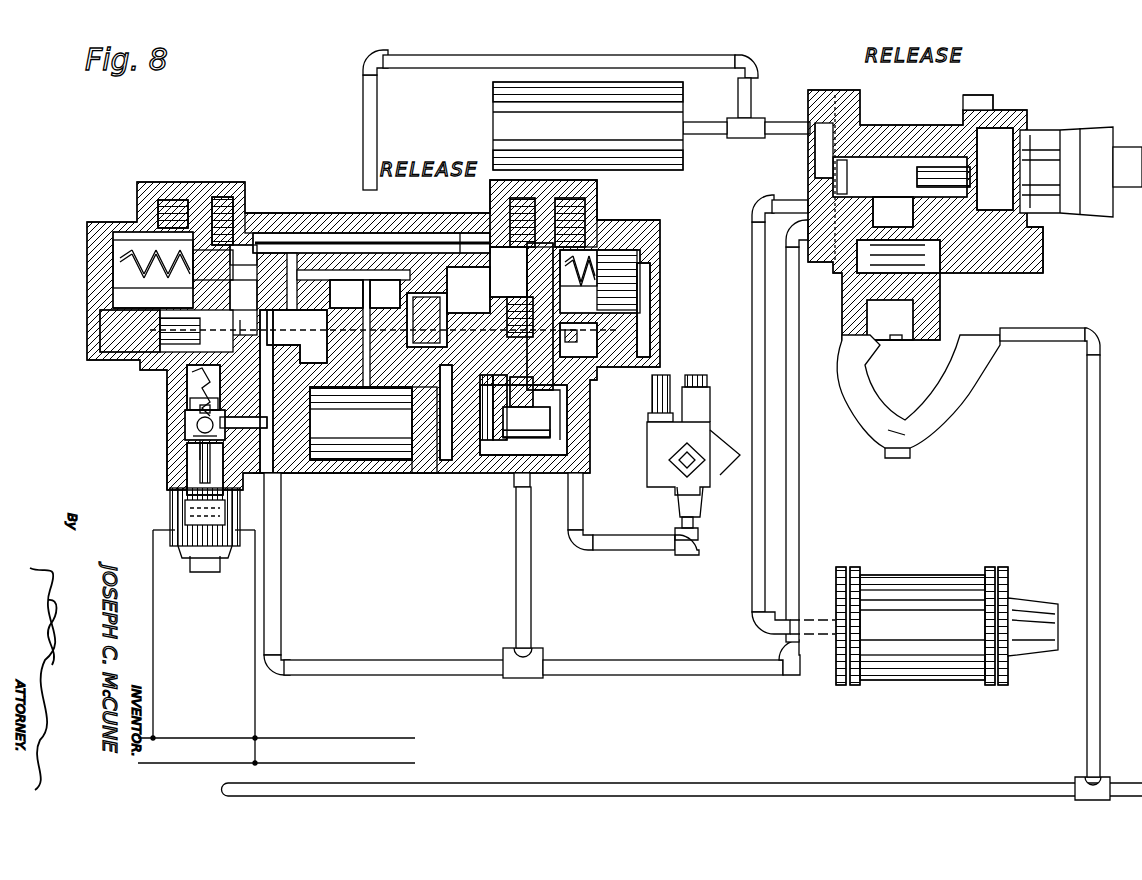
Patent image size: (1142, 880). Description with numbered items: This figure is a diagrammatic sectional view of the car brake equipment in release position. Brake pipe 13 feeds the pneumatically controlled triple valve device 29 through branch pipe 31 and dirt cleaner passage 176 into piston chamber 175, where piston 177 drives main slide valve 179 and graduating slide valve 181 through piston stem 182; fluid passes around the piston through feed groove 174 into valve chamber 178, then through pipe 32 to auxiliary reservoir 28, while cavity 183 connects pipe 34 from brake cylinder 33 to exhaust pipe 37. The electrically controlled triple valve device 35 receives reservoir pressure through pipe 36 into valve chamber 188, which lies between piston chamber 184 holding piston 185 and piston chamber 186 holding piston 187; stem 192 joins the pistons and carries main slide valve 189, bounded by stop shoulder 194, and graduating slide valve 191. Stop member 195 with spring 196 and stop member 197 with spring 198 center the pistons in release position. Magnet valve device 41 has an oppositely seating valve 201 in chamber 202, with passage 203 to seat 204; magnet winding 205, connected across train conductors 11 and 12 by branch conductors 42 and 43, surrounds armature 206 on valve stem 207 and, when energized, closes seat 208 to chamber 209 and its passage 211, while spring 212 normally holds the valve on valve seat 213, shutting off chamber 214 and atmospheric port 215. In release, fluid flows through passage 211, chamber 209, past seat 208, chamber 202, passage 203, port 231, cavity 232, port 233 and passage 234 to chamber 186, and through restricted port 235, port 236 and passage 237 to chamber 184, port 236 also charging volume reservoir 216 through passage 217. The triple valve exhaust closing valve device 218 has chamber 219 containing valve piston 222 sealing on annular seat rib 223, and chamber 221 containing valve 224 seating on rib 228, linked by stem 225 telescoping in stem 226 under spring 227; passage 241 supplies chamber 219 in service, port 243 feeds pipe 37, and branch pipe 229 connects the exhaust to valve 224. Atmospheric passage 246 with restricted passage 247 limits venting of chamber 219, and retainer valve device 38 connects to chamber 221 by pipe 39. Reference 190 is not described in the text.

The train conductor 11 is at (345, 736).
The train conductor 12 is at (368, 764).
The brake pipe 13 is at (762, 786).
The auxiliary reservoir 28 is at (500, 123).
The pneumatically controlled triple valve device 29 is at (1018, 76).
The branch pipe 31 is at (1100, 620).
The pipe 32 is at (705, 136).
The brake cylinder 33 is at (948, 556).
The pipe 34 is at (752, 262).
The electrically controlled triple valve device 35 is at (322, 193).
The pipe 36 is at (377, 120).
The pipe 37 is at (281, 480).
The retainer valve device 38 is at (700, 415).
The pipe 39 is at (583, 490).
The magnet valve device 41 is at (185, 510).
The branch conductor 42 is at (153, 540).
The branch conductor 43 is at (252, 565).
The feed groove 174 is at (965, 108).
The piston chamber 175 is at (1030, 128).
The dirt cleaner passage 176 is at (985, 270).
The piston 177 is at (1043, 240).
The valve chamber 178 is at (977, 160).
The main slide valve 179 is at (913, 205).
The graduating slide valve 181 is at (843, 170).
The piston stem 182 is at (930, 167).
The cavity 183 is at (905, 230).
The piston chamber 184 is at (580, 210).
The piston 185 is at (590, 197).
The piston chamber 186 is at (158, 205).
The piston 187 is at (222, 200).
The valve chamber 188 is at (430, 215).
The main slide valve 189 is at (260, 275).
The chamber 190 is at (245, 295).
The graduating slide valve 191 is at (270, 253).
The stem 192 is at (330, 240).
The stop shoulder 194 is at (249, 248).
The stop member 195 is at (615, 226).
The spring 196 is at (640, 250).
The stop member 197 is at (160, 300).
The spring 198 is at (120, 260).
The oppositely seating valve 201 is at (193, 437).
The chamber 202 is at (197, 425).
The passage 203 is at (258, 425).
The seat 204 is at (297, 336).
The magnet winding 205 is at (192, 572).
The armature 206 is at (178, 500).
The valve stem 207 is at (180, 493).
The seat 208 is at (200, 410).
The chamber 209 is at (215, 400).
The passage 211 is at (246, 324).
The spring 212 is at (192, 390).
The valve seat 213 is at (210, 437).
The chamber 214 is at (200, 470).
The atmospheric port 215 is at (187, 455).
The volume reservoir 216 is at (378, 473).
The passage 217 is at (361, 423).
The triple valve exhaust closing valve device 218 is at (620, 393).
The valve chamber 219 is at (580, 330).
The valve chamber 221 is at (486, 438).
The valve piston 222 is at (577, 338).
The annular seat rib 223 is at (493, 415).
The valve 224 is at (540, 470).
The stem 225 is at (516, 422).
The stem 226 is at (560, 425).
The spring 227 is at (533, 385).
The annular seat rib 228 is at (510, 455).
The branch pipe 229 is at (531, 600).
The port 231 is at (385, 294).
The cavity 232 is at (390, 240).
The port 233 is at (346, 294).
The passage 234 is at (100, 330).
The restricted port 235 is at (455, 233).
The port 236 is at (445, 280).
The passage 237 is at (673, 305).
The passage 241 is at (424, 430).
The port 243 is at (498, 270).
The atmospheric passage 246 is at (512, 268).
The restricted passage 247 is at (522, 317).